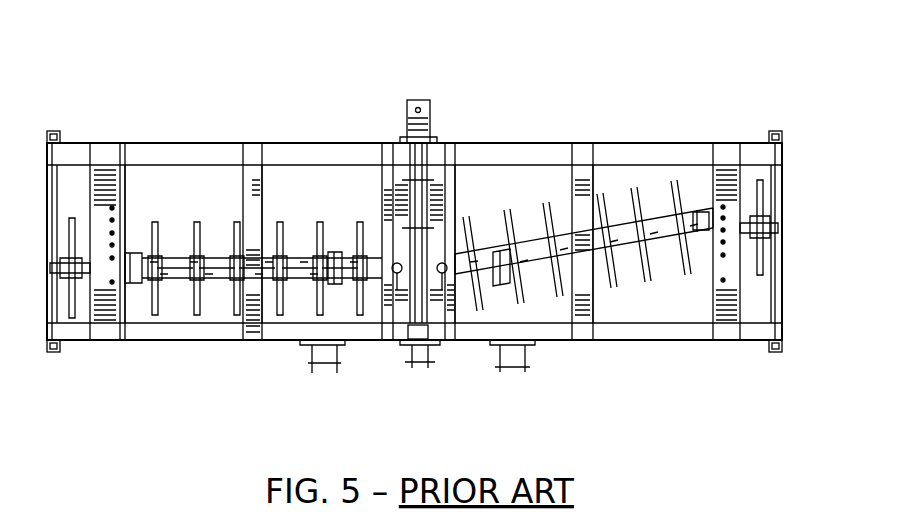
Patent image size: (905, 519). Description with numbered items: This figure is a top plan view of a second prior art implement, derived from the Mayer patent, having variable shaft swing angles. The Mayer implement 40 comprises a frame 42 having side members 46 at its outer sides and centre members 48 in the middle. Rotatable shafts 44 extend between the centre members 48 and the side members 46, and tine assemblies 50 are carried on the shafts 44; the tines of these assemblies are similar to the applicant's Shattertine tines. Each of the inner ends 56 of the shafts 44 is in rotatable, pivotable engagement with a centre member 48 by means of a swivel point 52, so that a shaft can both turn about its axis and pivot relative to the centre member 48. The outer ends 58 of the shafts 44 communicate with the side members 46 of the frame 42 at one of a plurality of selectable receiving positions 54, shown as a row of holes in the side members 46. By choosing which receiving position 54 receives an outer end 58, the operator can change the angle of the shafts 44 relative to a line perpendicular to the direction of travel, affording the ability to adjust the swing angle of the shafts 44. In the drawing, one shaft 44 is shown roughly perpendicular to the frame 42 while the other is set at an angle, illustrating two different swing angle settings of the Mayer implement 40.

The Mayer implement 40 is at (622, 72).
The frame 42 is at (248, 348).
The rotatable shafts 44 is at (183, 218).
The side members 46 is at (122, 183).
The centre members 48 is at (378, 216).
The tine assemblies 50 is at (186, 318).
The swivel point 52 is at (397, 290).
The selectable receiving positions 54 is at (108, 245).
The inner ends 56 is at (371, 292).
The outer ends 58 is at (134, 298).